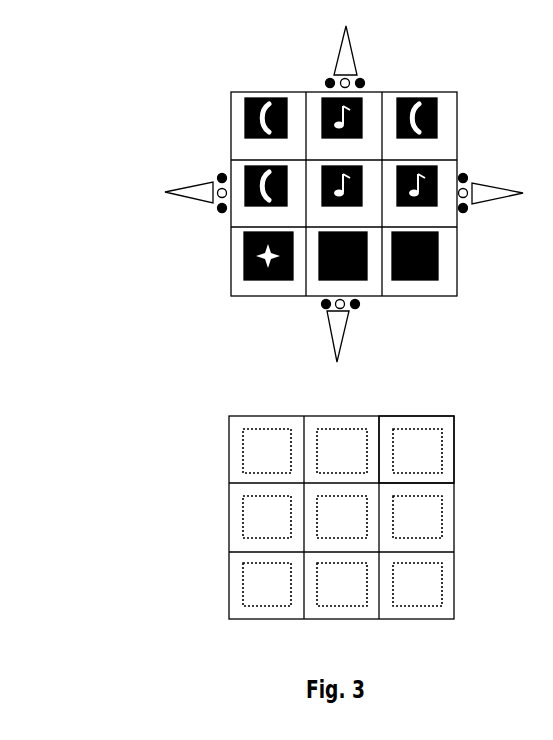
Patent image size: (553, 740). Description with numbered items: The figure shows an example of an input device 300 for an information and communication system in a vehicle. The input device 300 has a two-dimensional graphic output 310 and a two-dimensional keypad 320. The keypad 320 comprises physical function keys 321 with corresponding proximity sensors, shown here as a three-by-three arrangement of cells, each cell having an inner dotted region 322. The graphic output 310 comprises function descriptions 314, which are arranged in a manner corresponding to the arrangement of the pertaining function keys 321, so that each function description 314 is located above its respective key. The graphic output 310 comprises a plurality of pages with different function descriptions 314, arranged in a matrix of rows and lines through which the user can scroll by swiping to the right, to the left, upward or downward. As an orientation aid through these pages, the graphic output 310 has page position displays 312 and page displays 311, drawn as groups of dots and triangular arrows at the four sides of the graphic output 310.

The input device 300 is at (93, 50).
The graphic output 310 is at (135, 205).
The page display 311 is at (363, 43).
The page position display 312 is at (327, 76).
The function description 314 is at (258, 98).
The two-dimensional keypad 320 is at (207, 518).
The function key 321 is at (454, 453).
The icon placeholder region 322 is at (434, 514).